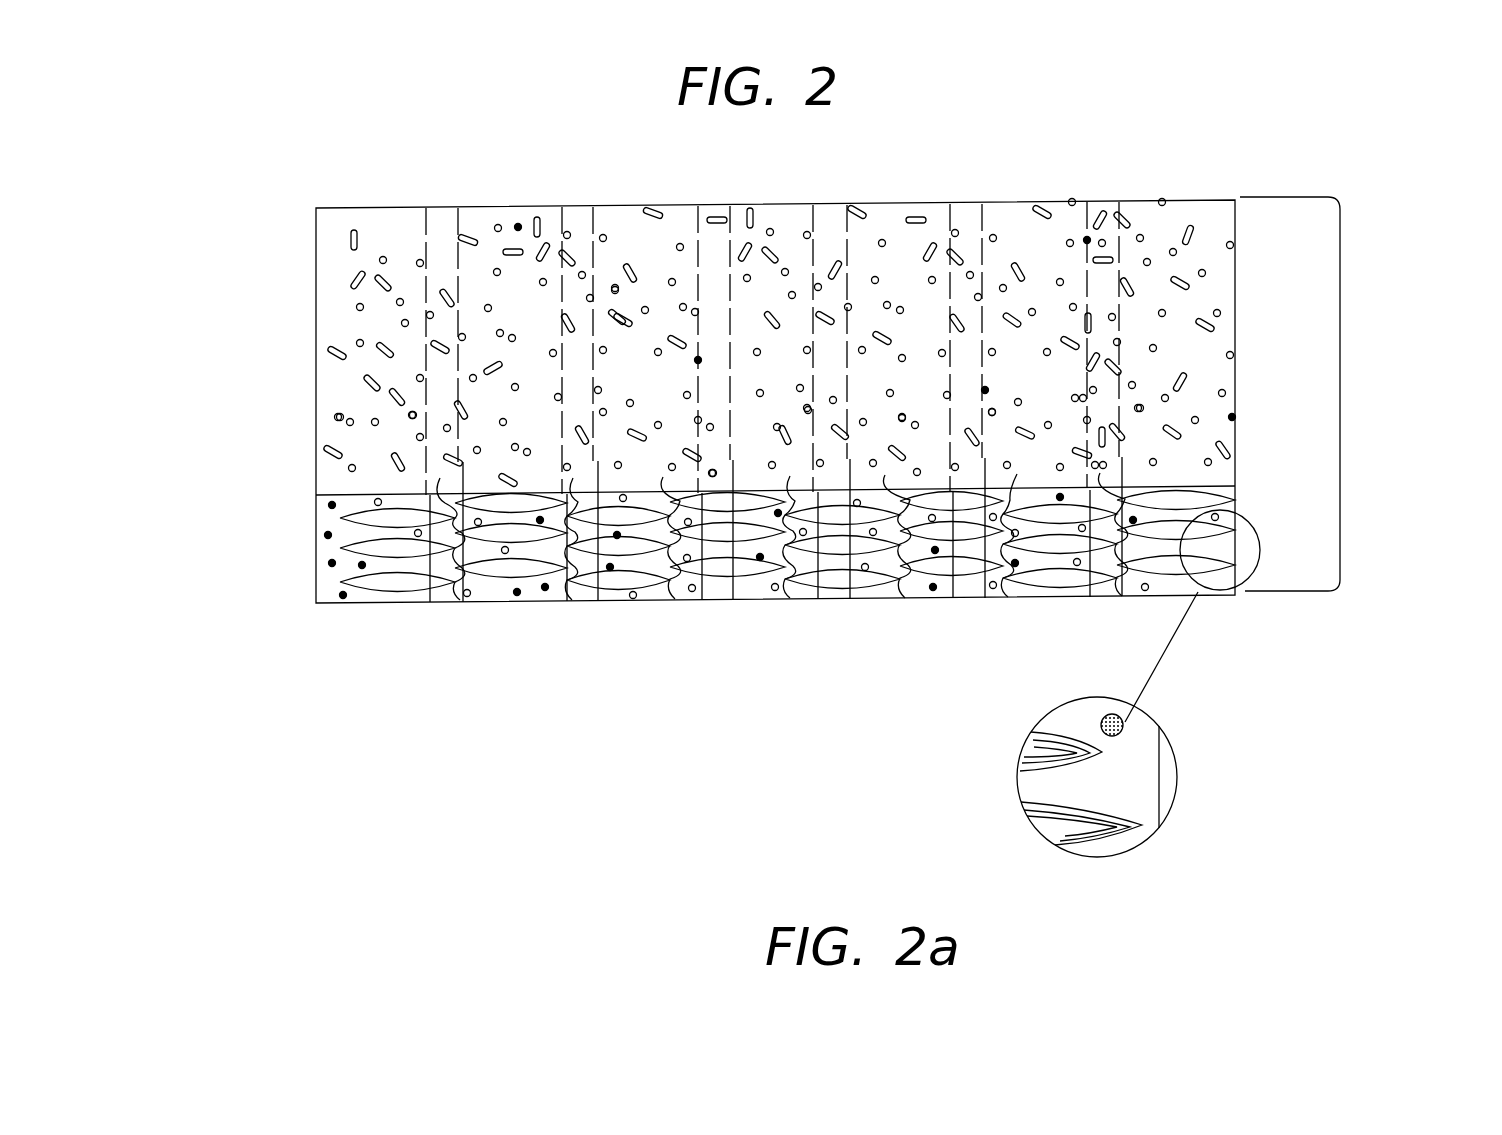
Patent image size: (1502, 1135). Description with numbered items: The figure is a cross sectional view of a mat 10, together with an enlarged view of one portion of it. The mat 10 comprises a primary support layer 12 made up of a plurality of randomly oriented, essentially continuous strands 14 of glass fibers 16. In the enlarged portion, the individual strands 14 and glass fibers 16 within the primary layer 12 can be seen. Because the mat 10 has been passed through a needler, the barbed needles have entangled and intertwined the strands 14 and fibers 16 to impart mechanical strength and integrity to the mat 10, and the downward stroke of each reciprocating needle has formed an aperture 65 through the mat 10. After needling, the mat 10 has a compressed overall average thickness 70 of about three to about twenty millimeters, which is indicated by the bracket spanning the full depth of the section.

In FIG. 2, the mat 10 is at (288, 731).
In FIG. 2, the primary support layer 12 is at (316, 505).
In FIG. 2, the strands 14 is at (393, 593).
In FIG. 2a, the strands 14 is at (1133, 720).
In FIG. 2a, the glass fibers 16 is at (1133, 717).
In FIG. 2, the aperture 65 is at (1119, 247).
In FIG. 2, the compressed overall average thickness 70 is at (1340, 393).